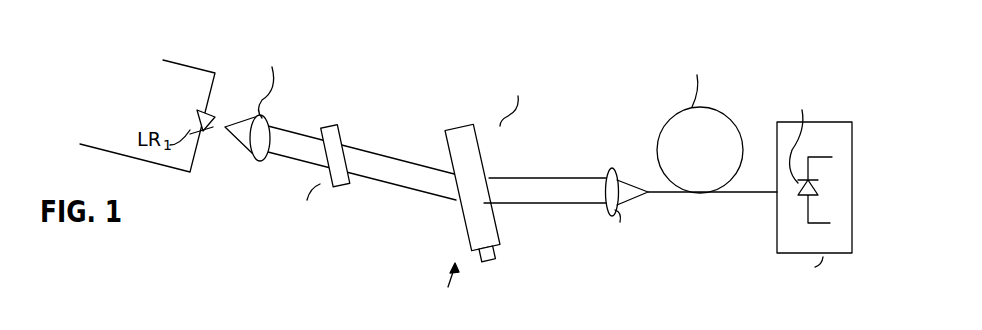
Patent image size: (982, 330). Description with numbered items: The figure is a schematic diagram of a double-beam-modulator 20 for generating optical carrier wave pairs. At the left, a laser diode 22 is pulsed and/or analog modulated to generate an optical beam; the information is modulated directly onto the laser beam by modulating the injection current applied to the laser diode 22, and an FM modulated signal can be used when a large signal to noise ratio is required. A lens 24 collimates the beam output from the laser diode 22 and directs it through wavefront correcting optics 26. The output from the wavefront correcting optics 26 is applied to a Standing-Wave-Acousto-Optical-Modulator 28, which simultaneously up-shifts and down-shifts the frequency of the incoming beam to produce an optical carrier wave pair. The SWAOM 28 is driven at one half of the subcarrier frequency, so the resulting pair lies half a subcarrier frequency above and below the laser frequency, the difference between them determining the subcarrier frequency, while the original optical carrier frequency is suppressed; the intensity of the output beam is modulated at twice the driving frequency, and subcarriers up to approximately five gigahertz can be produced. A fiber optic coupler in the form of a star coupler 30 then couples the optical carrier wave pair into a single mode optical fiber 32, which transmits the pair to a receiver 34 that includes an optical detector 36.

The double-beam-modulator 20 is at (522, 48).
The laser diode 22 is at (205, 109).
The lens 24 is at (247, 150).
The wavefront correcting optics 26 is at (351, 138).
The Standing-Wave-Acousto-Optical-Modulator 28 is at (478, 234).
The star coupler 30 is at (609, 173).
The single mode optical fiber 32 is at (658, 140).
The receiver 34 is at (768, 232).
The optical detector 36 is at (820, 195).